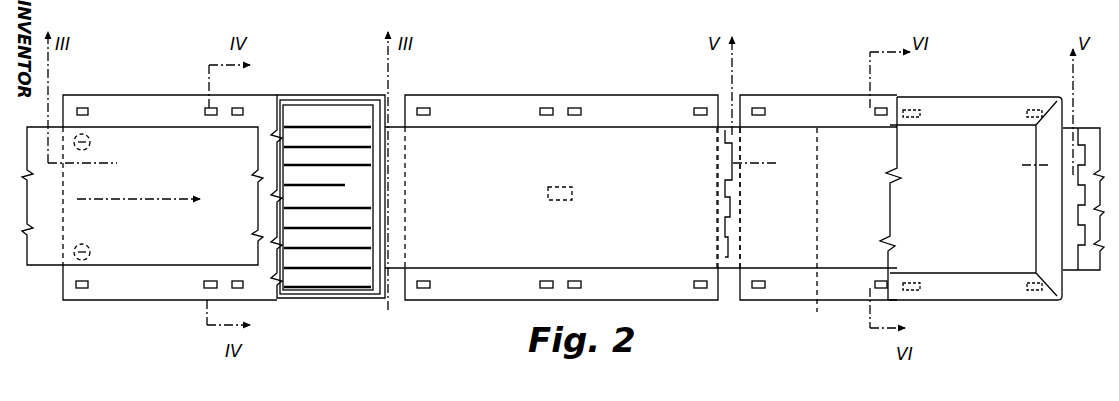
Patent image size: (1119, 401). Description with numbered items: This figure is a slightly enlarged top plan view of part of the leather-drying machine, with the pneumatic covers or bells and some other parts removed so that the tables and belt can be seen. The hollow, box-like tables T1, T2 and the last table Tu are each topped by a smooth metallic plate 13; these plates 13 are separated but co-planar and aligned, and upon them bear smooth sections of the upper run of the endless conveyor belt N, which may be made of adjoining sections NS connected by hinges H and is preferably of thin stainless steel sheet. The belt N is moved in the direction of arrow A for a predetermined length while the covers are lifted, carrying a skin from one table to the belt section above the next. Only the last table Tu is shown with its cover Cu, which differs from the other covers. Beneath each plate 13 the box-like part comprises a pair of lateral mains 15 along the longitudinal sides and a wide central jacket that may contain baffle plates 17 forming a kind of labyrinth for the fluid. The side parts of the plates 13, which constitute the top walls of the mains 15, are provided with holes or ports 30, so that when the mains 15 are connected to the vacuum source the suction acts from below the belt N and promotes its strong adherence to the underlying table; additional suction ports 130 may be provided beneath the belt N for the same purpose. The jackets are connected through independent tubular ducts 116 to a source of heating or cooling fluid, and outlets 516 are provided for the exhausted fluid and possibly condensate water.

The smooth metallic plate 13 is at (132, 291).
The lateral ducts or mains 15 is at (330, 118).
The baffle plates 17 is at (350, 165).
The holes or ports 30 is at (83, 108).
The tubular ducts 116 is at (90, 250).
The additional suction ports 130 is at (575, 193).
The outlets 516 is at (90, 145).
The arrow indicating belt direction A is at (145, 198).
The hinges H is at (729, 182).
The endless conveyor belt N is at (48, 268).
The adjoining sections of belt NS is at (820, 237).
The table T1 is at (152, 60).
The table T2 is at (613, 93).
The last table Tu is at (840, 92).
The cover of the last table Cu is at (988, 116).